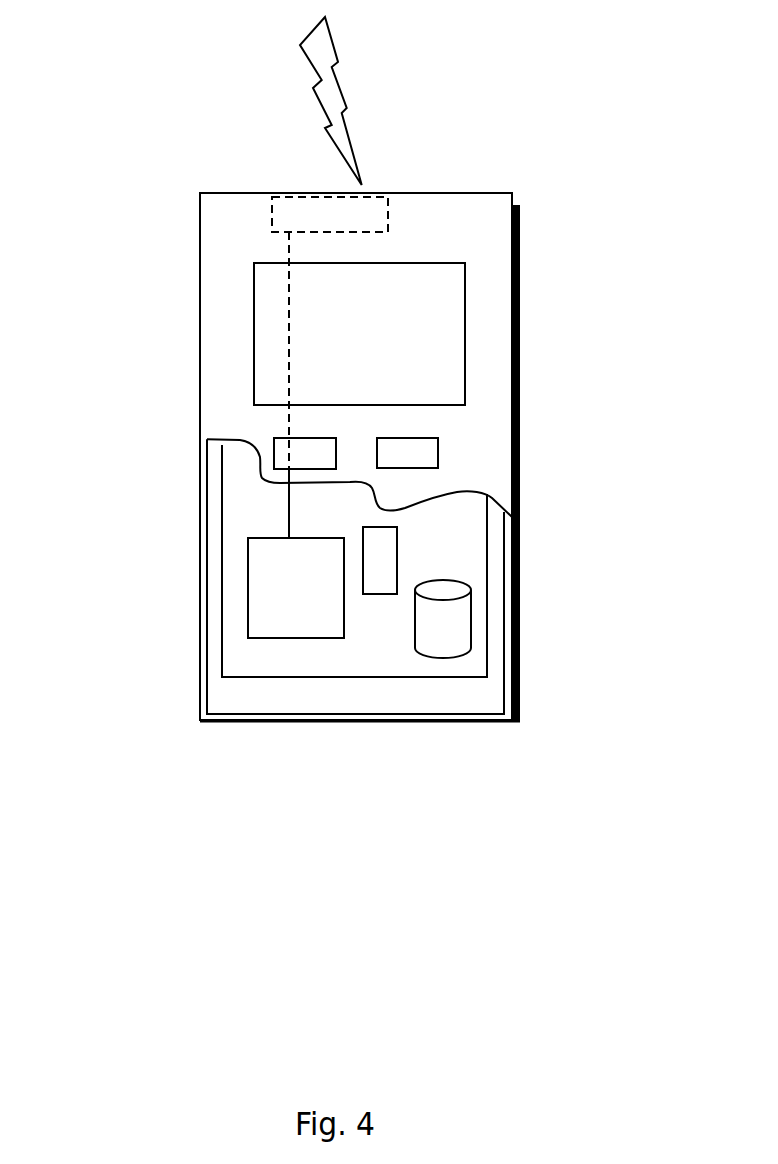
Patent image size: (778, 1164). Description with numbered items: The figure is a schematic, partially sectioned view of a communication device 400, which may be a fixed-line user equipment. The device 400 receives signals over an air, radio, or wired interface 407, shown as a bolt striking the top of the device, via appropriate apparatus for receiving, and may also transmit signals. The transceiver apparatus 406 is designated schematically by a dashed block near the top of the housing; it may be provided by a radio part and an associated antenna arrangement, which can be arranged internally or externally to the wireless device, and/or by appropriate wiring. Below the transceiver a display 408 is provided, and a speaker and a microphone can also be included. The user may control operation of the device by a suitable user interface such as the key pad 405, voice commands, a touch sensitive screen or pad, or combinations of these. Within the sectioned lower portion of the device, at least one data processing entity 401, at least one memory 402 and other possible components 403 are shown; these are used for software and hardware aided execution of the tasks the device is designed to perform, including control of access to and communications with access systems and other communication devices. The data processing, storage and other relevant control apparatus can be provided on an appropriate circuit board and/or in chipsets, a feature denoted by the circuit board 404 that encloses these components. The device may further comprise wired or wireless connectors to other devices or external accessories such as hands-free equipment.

The communication device 400 is at (202, 237).
The data processing entity 401 is at (255, 571).
The memory 402 is at (437, 630).
The other possible components 403 is at (378, 544).
The circuit board 404 is at (247, 658).
The key pad 405 is at (278, 454).
The transceiver apparatus 406 is at (377, 208).
The air, radio, or wired interface 407 is at (366, 120).
The display 408 is at (272, 320).